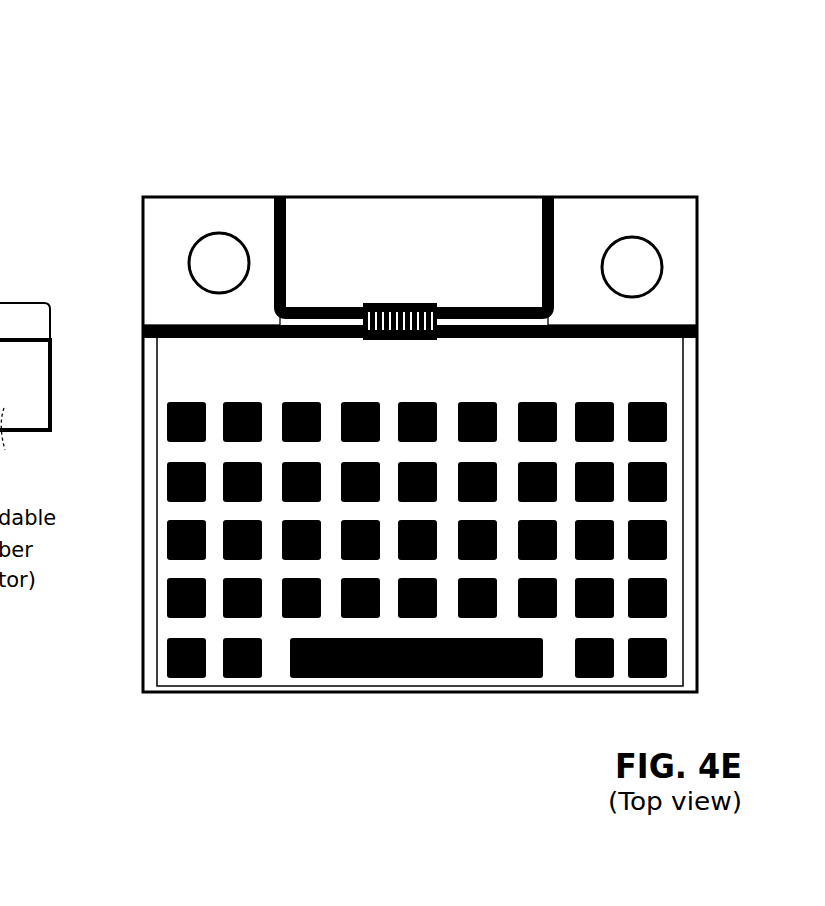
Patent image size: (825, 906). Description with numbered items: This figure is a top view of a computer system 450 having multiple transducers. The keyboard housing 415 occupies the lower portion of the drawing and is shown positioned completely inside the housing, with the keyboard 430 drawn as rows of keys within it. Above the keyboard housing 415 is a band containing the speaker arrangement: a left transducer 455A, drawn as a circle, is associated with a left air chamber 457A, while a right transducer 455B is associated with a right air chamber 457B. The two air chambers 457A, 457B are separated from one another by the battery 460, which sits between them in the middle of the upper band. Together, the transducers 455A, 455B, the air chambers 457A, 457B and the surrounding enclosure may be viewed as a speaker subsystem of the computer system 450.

The computer system 450 is at (118, 147).
The keyboard housing 415 is at (144, 560).
The keyboard 430 is at (288, 656).
The battery 460 is at (414, 268).
The transducer 455A is at (202, 235).
The air chamber 457A is at (246, 224).
The transducer 455B is at (648, 269).
The air chamber 457B is at (569, 237).